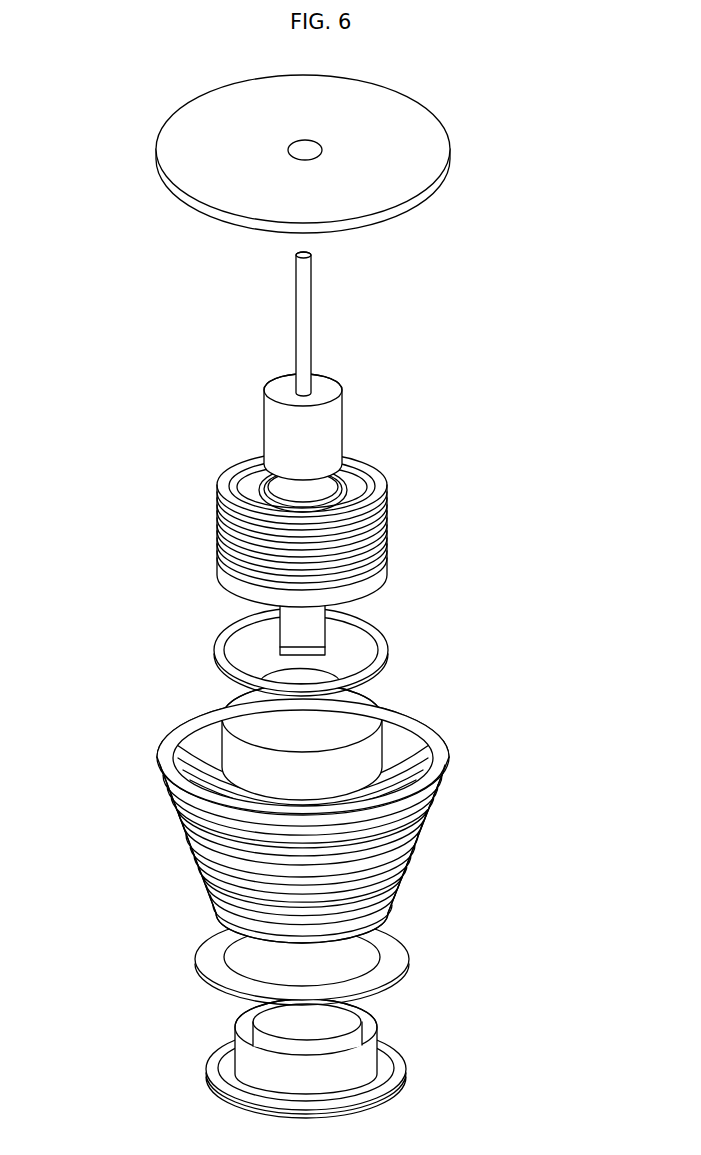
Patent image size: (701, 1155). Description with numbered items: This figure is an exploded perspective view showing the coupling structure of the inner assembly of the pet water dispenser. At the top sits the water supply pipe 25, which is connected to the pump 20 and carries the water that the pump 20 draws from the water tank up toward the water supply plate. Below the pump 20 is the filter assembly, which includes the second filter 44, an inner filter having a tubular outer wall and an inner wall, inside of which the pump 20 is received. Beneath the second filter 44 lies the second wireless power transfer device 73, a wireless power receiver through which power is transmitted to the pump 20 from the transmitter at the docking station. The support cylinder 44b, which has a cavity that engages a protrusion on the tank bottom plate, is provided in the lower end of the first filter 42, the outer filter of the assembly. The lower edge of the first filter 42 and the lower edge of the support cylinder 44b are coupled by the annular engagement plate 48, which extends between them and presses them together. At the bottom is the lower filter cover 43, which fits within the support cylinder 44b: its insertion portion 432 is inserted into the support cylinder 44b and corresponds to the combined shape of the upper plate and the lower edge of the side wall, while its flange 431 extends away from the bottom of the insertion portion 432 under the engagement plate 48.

The pump 20 is at (322, 434).
The water supply pipe 25 is at (308, 326).
The first filter 42 is at (364, 806).
The lower filter cover 43 is at (400, 1054).
The second filter 44 is at (438, 528).
The support cylinder 44b is at (358, 753).
The engagement plate 48 is at (213, 946).
The second wireless power transfer device 73 is at (313, 637).
The flange 431 is at (380, 1067).
The insertion portion 432 is at (370, 1003).